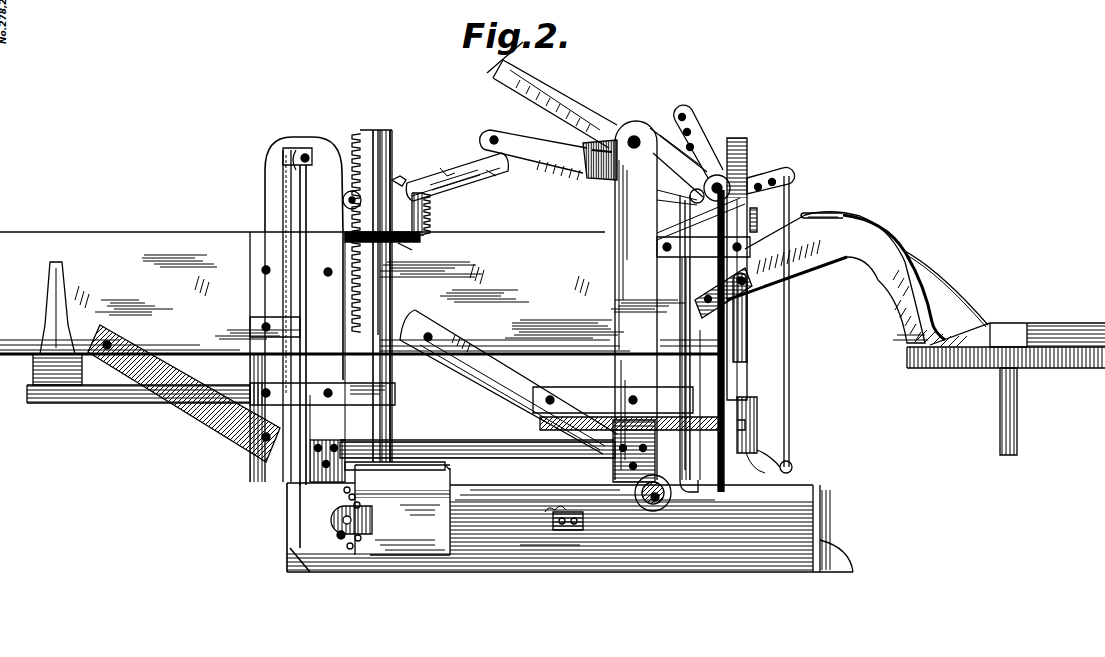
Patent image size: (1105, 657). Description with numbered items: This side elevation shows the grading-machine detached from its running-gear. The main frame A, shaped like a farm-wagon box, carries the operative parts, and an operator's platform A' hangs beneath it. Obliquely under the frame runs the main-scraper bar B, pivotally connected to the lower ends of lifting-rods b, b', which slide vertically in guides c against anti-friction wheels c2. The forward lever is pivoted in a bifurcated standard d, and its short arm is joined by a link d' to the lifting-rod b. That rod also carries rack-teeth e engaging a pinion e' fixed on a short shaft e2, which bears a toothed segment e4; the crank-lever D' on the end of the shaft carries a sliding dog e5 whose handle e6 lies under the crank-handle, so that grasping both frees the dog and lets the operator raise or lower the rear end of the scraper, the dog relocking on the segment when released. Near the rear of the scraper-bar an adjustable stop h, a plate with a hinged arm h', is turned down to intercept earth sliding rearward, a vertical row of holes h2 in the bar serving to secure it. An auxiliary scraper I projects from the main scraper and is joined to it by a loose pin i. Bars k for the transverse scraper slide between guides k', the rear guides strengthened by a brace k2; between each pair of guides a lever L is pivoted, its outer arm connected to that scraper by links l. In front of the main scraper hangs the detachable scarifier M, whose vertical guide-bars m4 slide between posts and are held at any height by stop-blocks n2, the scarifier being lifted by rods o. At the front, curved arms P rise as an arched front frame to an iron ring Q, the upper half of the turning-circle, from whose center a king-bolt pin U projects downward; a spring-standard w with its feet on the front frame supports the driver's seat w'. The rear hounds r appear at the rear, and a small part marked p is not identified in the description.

The main frame A is at (361, 317).
The operator's platform A' is at (478, 384).
The main-scraper bar B is at (474, 572).
The crank-lever D' is at (457, 178).
The auxiliary scraper I is at (612, 568).
The lever L is at (240, 485).
The transverse scarifier M is at (758, 435).
The curved arms P is at (827, 277).
The iron ring Q is at (1006, 357).
The king-bolt pin U is at (1017, 413).
The lifting-rod b is at (383, 296).
The lifting-rod b' is at (582, 285).
The guide c is at (388, 392).
The anti-friction wheels c2 is at (395, 481).
The bifurcated standard d is at (575, 178).
The link d' is at (713, 211).
The rack-teeth e is at (366, 296).
The pinion e' is at (443, 160).
The short shaft e2 is at (371, 220).
The segment e4 is at (411, 197).
The sliding dog e5 is at (414, 254).
The handle e6 is at (496, 183).
The adjustable stop h is at (402, 510).
The arm h' is at (342, 518).
The vertical row of holes h2 is at (333, 566).
The pin i is at (550, 515).
The bars k is at (255, 314).
The guides k' is at (291, 357).
The brace k2 is at (184, 393).
The rods or links l is at (285, 203).
The vertical guide-bars m4 is at (755, 265).
The stop-blocks n2 is at (715, 341).
The lifting-rods o is at (808, 316).
The pivot p is at (690, 166).
The rear hounds r is at (80, 345).
The spring-standard w is at (945, 288).
The driver's seat w' is at (873, 272).